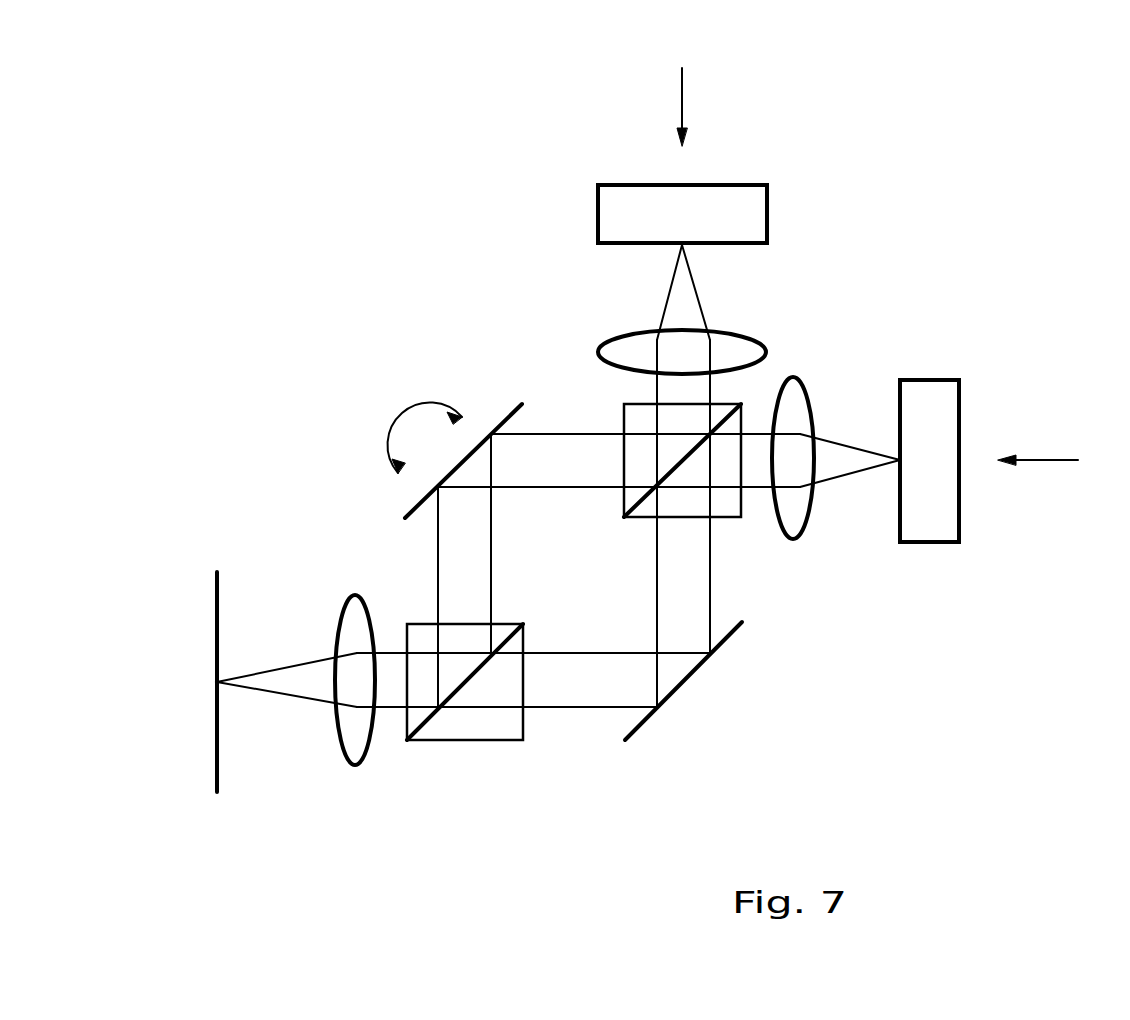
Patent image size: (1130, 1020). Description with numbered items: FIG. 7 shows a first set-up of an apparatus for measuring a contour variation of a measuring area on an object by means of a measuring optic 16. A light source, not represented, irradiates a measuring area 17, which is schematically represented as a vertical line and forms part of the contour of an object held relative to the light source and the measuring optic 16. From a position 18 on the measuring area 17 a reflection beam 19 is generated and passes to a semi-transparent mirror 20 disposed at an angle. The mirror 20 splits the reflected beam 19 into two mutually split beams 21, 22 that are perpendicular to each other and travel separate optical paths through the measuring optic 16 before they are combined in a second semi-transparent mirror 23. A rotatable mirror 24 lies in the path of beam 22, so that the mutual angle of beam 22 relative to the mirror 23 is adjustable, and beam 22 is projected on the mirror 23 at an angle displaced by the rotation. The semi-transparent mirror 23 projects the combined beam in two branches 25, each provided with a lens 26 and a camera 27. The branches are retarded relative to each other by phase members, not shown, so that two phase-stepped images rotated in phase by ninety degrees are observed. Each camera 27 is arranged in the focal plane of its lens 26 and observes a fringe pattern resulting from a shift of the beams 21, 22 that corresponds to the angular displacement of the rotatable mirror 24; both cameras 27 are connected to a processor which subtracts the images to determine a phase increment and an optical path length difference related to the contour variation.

The measuring optic 16 is at (871, 684).
The measuring area 17 is at (213, 628).
The position 18 is at (216, 682).
The reflection beam 19 is at (292, 683).
The semi-transparent mirror 20 is at (463, 743).
The beam 21 is at (587, 686).
The beam 22 is at (465, 571).
The second semi-transparent mirror 23 is at (740, 517).
The rotatable mirror 24 is at (433, 447).
The branch 25 is at (894, 258).
The lens 26 is at (767, 350).
The camera 27 is at (767, 210).